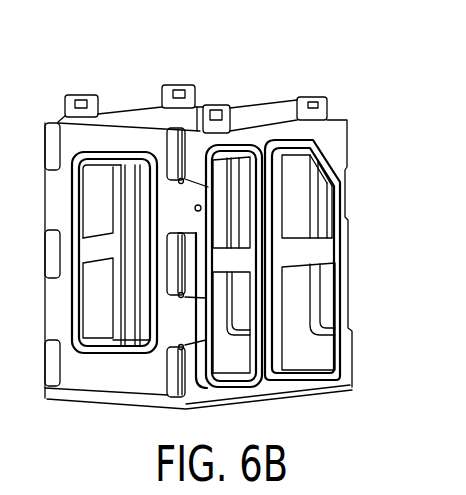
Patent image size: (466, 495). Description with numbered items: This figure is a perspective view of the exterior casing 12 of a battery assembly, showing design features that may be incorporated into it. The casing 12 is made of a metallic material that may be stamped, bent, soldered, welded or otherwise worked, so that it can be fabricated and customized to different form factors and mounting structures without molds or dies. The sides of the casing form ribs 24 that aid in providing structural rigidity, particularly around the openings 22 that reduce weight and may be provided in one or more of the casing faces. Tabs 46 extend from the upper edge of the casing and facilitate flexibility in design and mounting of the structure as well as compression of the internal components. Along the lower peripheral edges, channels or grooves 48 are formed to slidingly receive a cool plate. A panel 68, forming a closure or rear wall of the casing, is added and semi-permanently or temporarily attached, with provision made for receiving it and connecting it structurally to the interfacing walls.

The casing 12 is at (366, 119).
The openings 22 is at (303, 225).
The ribs 24 is at (265, 365).
The tabs 46 is at (82, 97).
The channels or grooves 48 is at (173, 407).
The panel 68 is at (57, 208).